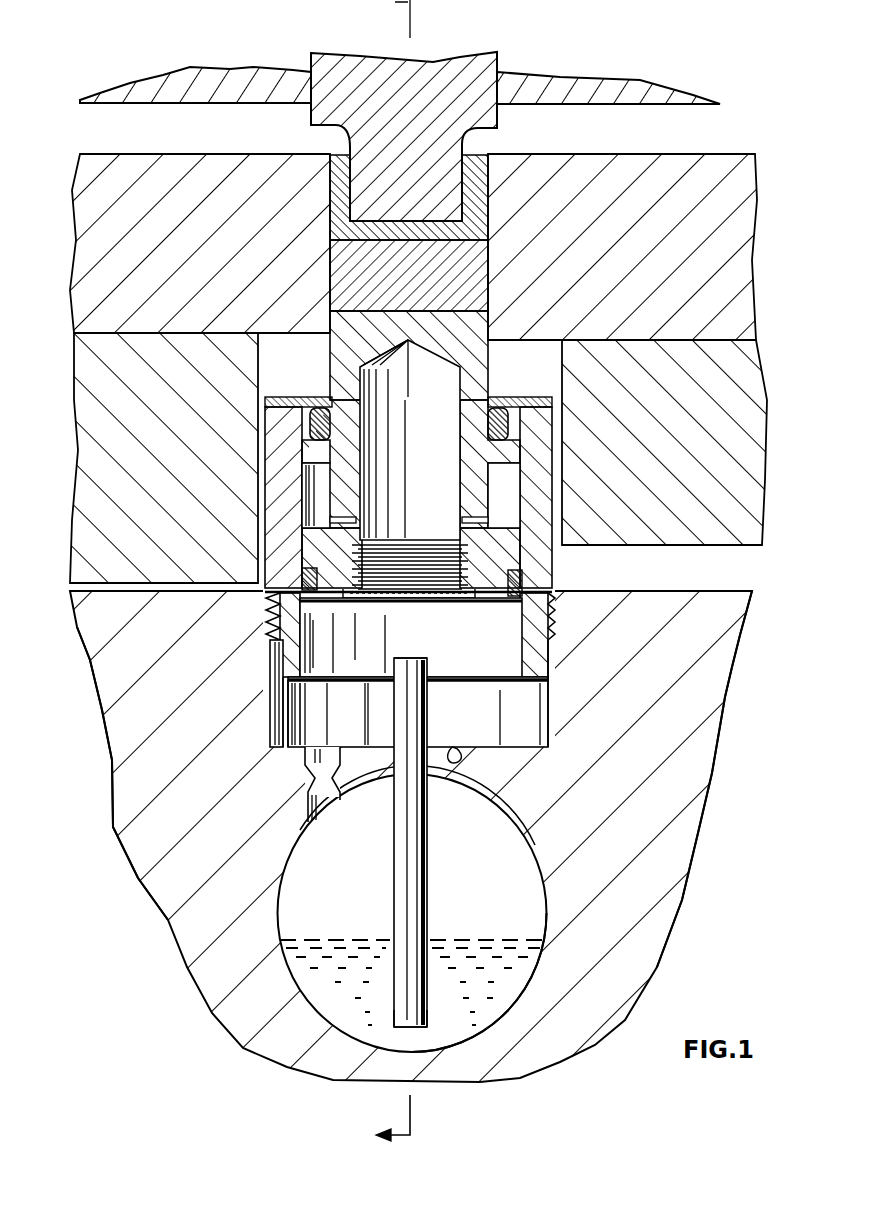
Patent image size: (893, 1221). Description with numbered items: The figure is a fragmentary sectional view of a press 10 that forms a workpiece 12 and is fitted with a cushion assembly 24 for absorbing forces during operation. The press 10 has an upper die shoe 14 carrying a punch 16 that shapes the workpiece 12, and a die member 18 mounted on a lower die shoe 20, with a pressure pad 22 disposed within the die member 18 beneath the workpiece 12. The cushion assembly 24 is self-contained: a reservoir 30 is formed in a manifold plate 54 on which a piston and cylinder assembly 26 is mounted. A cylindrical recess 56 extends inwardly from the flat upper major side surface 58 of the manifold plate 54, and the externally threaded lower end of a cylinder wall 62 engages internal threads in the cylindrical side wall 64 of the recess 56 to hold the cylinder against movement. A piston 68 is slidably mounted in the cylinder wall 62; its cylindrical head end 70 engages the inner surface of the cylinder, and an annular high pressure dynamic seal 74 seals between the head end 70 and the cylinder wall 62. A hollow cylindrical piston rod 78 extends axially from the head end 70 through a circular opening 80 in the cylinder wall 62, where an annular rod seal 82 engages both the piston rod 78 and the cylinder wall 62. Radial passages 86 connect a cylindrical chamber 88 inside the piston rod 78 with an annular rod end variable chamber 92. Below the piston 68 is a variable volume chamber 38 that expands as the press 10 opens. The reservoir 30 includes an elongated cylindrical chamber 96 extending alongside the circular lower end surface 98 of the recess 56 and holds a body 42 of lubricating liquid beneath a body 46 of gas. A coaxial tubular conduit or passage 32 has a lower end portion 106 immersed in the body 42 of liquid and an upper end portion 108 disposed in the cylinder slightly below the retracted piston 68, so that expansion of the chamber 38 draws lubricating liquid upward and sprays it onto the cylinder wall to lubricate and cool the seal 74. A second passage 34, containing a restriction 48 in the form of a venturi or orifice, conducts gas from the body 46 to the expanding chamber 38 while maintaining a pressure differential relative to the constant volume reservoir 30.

The press 10 is at (437, 572).
The workpiece 12 is at (472, 165).
The upper die shoe 14 is at (607, 90).
The punch 16 is at (460, 78).
The die member 18 is at (694, 183).
The lower die shoe 20 is at (763, 381).
The pressure pad 22 is at (468, 286).
The cushion assembly 24 is at (665, 642).
The piston and cylinder assembly 26 is at (454, 494).
The reservoir 30 is at (560, 858).
The passage 32 is at (411, 875).
The passage 34 is at (276, 783).
The variable volume chamber 38 is at (442, 672).
The body of lubricating liquid 42 is at (465, 1013).
The body of gas 46 is at (488, 840).
The restriction 48 is at (337, 766).
The manifold plate 54 is at (728, 769).
The cylindrical recess 56 is at (300, 723).
The upper major side surface 58 is at (597, 592).
The cylinder wall 62 is at (538, 466).
The cylindrical side wall 64 is at (284, 708).
The piston 68 is at (322, 492).
The head end 70 is at (322, 541).
The high pressure dynamic seal 74 is at (320, 601).
The piston rod 78 is at (343, 346).
The circular opening 80 is at (318, 456).
The rod seal 82 is at (323, 407).
The radial passage 86 is at (468, 524).
The cylindrical chamber 88 is at (442, 381).
The rod end variable chamber 92 is at (512, 499).
The reservoir chamber 96 is at (543, 905).
The lower end surface 98 is at (448, 745).
The lower end portion 106 is at (407, 1025).
The upper end portion 108 is at (414, 666).